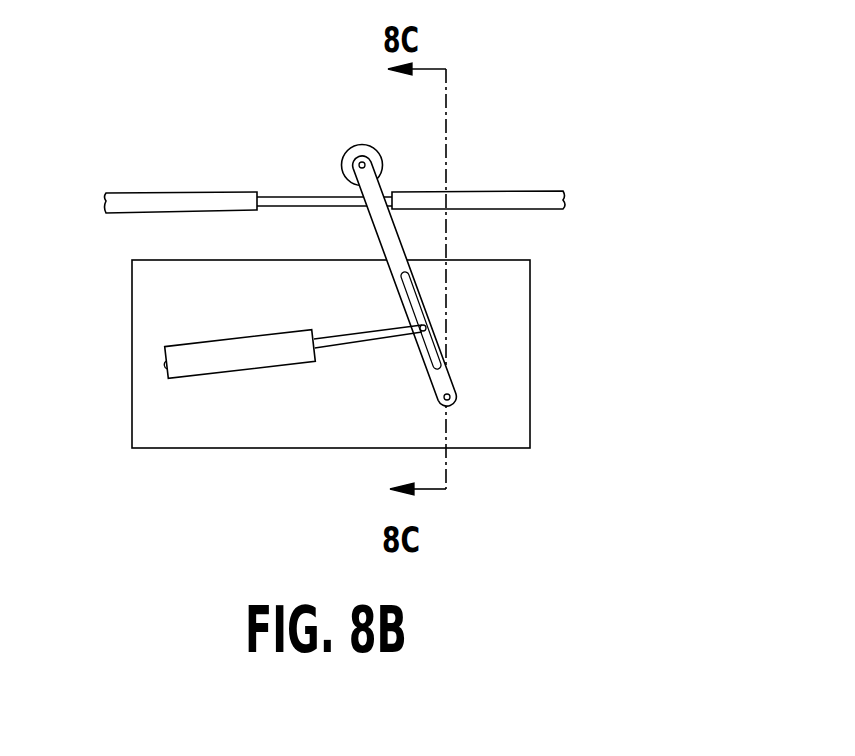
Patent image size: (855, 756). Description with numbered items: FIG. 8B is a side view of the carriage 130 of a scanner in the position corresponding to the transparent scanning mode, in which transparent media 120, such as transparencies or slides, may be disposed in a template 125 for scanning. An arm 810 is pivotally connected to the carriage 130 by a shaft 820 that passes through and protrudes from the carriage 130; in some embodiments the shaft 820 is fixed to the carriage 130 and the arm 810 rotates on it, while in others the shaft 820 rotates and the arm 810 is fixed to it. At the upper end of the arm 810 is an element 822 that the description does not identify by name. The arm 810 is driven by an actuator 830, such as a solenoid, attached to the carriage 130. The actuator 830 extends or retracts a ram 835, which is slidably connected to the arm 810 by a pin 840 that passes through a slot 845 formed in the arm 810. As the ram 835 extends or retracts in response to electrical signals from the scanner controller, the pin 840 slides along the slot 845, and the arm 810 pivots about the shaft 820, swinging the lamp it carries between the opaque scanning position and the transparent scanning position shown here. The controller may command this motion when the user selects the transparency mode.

The transparent media 120 is at (291, 195).
The template 125 is at (508, 192).
The carriage 130 is at (203, 438).
The arm 810 is at (397, 238).
The shaft 820 is at (451, 406).
The roller 822 is at (382, 151).
The actuator 830 is at (190, 373).
The ram 835 is at (337, 348).
The pin 840 is at (427, 328).
The slot 845 is at (441, 363).